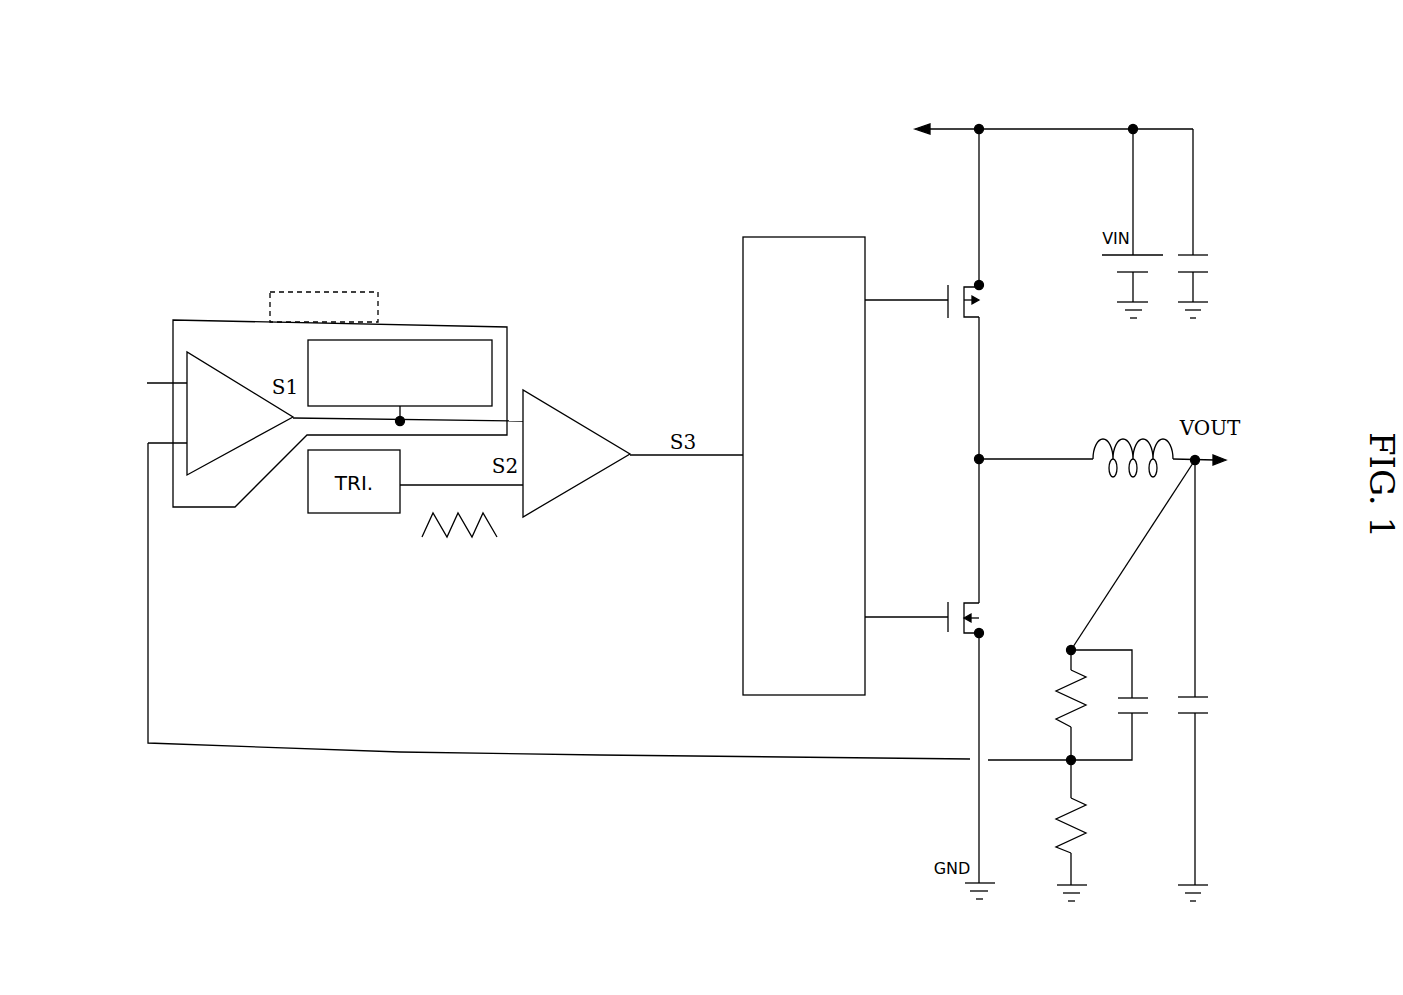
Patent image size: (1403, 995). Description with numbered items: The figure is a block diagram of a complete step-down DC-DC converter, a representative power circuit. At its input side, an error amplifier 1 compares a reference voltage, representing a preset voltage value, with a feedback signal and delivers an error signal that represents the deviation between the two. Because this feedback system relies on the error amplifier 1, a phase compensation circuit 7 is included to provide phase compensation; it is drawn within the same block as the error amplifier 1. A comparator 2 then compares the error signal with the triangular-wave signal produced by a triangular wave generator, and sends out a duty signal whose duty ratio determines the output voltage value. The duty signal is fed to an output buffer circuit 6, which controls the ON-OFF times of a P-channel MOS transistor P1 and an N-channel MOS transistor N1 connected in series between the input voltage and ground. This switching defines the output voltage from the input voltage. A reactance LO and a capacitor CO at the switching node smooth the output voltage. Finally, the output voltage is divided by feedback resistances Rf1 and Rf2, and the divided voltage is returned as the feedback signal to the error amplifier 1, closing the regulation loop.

The error amplifier 1 is at (226, 370).
The comparator 2 is at (560, 425).
The output buffer circuit 6 is at (785, 250).
The phase compensation circuit 7 is at (468, 350).
The P-channel MOS transistor P1 is at (995, 299).
The N-channel MOS transistor N1 is at (995, 620).
The reactance LO is at (1133, 440).
The capacitor CO is at (1210, 680).
The feedback resistance Rf1 is at (1048, 705).
The feedback resistance Rf2 is at (1048, 830).